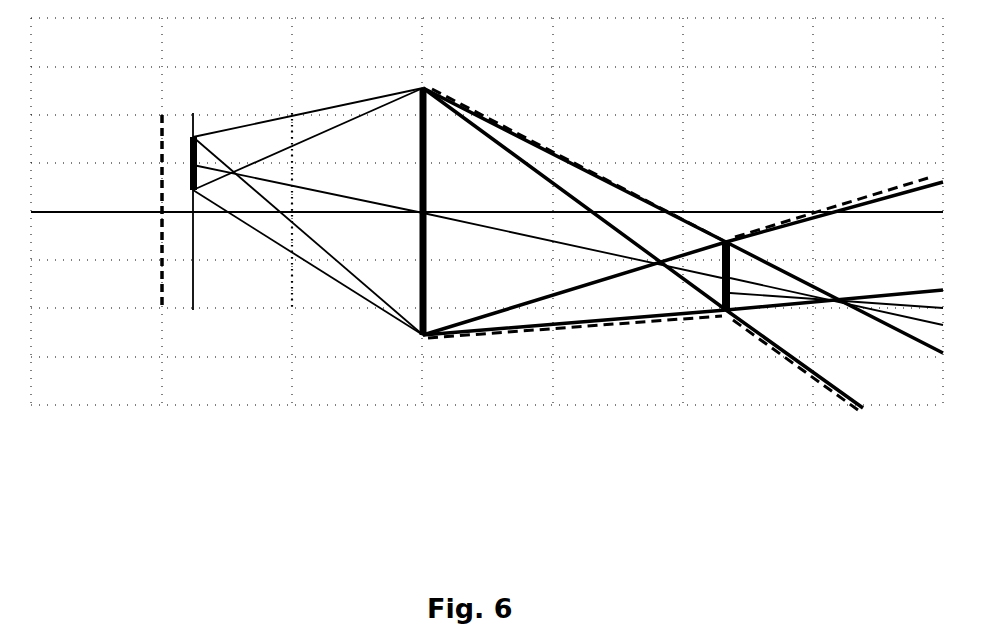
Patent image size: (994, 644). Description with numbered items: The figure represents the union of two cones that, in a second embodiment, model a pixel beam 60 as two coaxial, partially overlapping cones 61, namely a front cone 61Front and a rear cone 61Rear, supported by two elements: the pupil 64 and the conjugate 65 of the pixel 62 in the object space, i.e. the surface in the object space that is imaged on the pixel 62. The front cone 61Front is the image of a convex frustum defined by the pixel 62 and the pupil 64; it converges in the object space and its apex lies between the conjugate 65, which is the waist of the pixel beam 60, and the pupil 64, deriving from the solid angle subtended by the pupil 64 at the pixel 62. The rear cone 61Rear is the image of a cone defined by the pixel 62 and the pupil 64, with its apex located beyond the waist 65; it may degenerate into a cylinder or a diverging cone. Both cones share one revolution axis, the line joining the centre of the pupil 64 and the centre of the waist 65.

The pixel beam 60 is at (698, 316).
The cones 61 is at (683, 248).
The rear cone 61Rear is at (540, 292).
The front cone 61Front is at (789, 280).
The pixel 62 is at (194, 143).
The pupil 64 is at (417, 167).
The conjugate of the pixel 65 is at (722, 265).